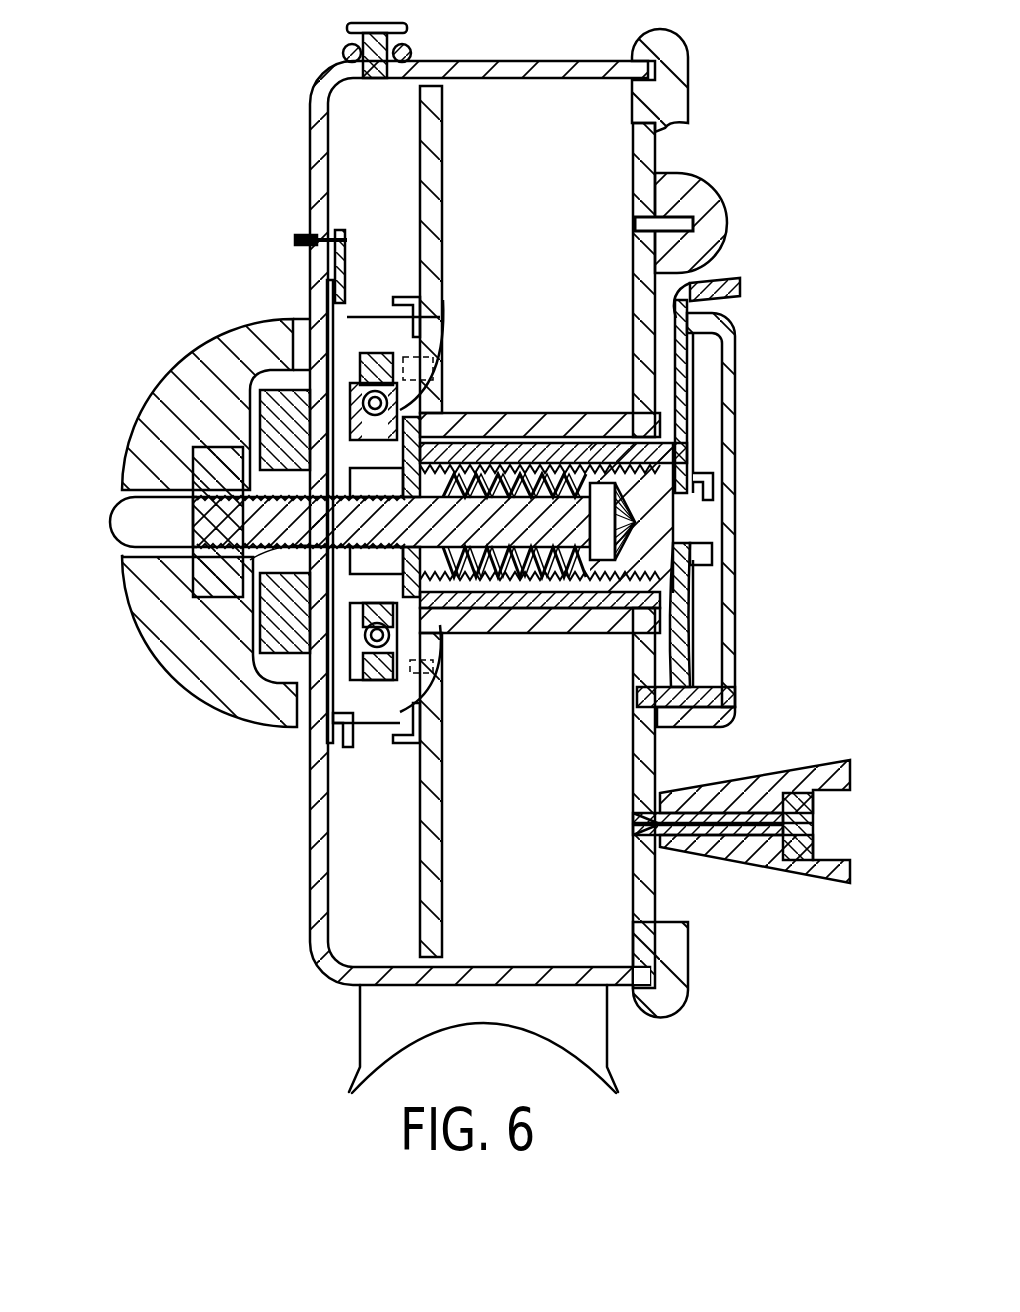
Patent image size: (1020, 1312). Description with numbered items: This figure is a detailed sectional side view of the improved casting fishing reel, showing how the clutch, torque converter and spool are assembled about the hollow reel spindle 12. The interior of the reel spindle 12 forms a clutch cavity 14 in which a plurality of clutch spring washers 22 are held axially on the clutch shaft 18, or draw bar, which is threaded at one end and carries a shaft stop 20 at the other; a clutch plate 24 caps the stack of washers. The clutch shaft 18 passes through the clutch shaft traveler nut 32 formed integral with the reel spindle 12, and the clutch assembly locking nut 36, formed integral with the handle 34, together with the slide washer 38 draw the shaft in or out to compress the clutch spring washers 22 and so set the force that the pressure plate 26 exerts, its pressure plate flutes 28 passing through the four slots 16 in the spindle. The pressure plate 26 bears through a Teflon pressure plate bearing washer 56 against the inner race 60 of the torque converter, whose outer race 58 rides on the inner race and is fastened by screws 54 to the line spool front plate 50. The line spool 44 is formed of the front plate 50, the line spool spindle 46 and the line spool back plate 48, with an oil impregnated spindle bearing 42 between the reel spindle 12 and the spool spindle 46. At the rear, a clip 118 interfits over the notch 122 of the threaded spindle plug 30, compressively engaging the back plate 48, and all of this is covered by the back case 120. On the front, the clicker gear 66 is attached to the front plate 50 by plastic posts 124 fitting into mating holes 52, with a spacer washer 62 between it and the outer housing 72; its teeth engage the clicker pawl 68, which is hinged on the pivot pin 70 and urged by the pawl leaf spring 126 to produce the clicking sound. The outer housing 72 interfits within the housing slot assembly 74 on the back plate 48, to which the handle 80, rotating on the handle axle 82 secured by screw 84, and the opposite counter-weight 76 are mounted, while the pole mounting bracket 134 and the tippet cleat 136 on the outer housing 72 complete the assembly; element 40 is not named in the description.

The reel spindle 12 is at (660, 452).
The clutch cavity 14 is at (376, 563).
The slots 16 is at (376, 485).
The clutch shaft 18 is at (391, 511).
The shaft stop 20 is at (597, 538).
The clutch spring washers 22 is at (514, 525).
The clutch plate 24 is at (420, 430).
The pressure plate 26 is at (448, 640).
The pressure plate flutes 28 is at (476, 632).
The threaded spindle plug 30 is at (712, 503).
The clutch shaft traveler nut 32 is at (285, 613).
The handle 34 is at (134, 580).
The clutch assembly locking nut 36 is at (303, 330).
The slide washer 38 is at (330, 545).
The slot 40 is at (216, 516).
The spindle bearing 42 is at (660, 440).
The line spool 44 is at (700, 296).
The line spool spindle 46 is at (502, 426).
The line spool back plate 48 is at (636, 303).
The line spool front plate 50 is at (444, 157).
The mating holes 52 is at (420, 305).
The screws 54 is at (460, 336).
The pressure plate bearing washer 56 is at (428, 740).
The outer race 58 is at (373, 318).
The inner race 60 is at (415, 362).
The spacer washer 62 is at (318, 426).
The clicker gear 66 is at (352, 318).
The clicker pawl 68 is at (326, 238).
The pivot pin 70 is at (322, 247).
The outer housing 72 is at (316, 178).
The housing slot assembly 74 is at (680, 70).
The counter-weight 76 is at (728, 214).
The handle 80 is at (818, 873).
The handle axle 82 is at (816, 800).
The screw 84 is at (638, 832).
The clip 118 is at (700, 609).
The back case 120 is at (735, 673).
The notch 122 is at (710, 560).
The plastic posts 124 is at (446, 330).
The pawl leaf spring 126 is at (345, 250).
The pole mounting bracket 134 is at (376, 1021).
The tippet cleat 136 is at (342, 42).